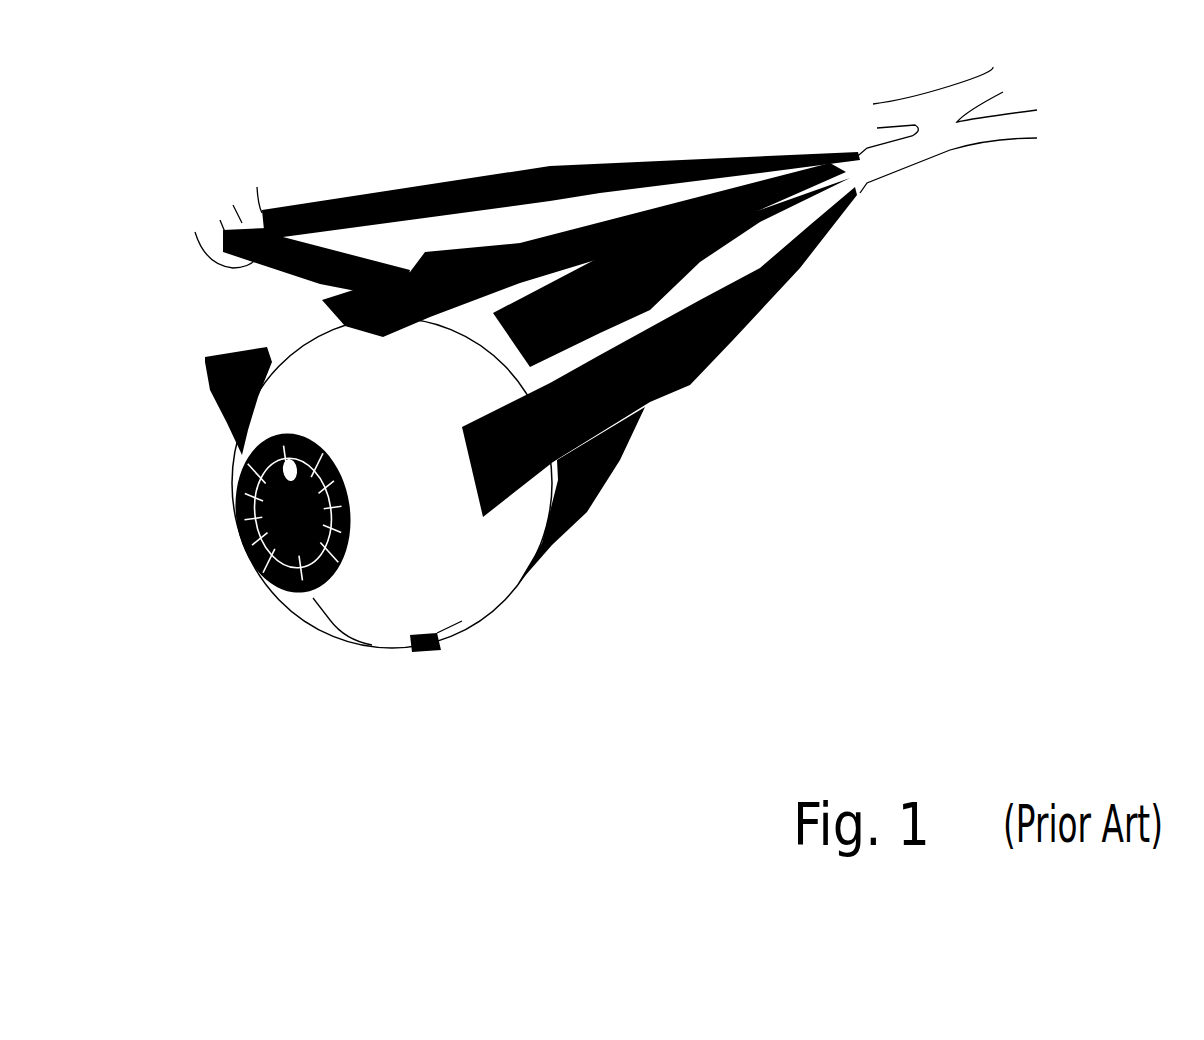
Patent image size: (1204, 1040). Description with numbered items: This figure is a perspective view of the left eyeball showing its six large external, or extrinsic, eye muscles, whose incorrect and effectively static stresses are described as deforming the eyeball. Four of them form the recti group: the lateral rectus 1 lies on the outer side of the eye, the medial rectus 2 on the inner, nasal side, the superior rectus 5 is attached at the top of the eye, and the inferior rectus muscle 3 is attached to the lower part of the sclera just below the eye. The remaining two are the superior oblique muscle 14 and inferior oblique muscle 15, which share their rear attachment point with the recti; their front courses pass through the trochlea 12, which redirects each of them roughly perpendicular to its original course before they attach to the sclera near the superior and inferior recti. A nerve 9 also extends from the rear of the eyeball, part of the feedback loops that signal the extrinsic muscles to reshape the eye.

The lateral rectus 1 is at (697, 385).
The medial rectus 2 is at (600, 262).
The inferior rectus muscle 3 is at (506, 625).
The superior rectus 5 is at (541, 243).
The nerve 9 is at (790, 280).
The trochlea 12 is at (248, 213).
The superior oblique muscle 14 is at (541, 156).
The inferior oblique muscle 15 is at (460, 622).